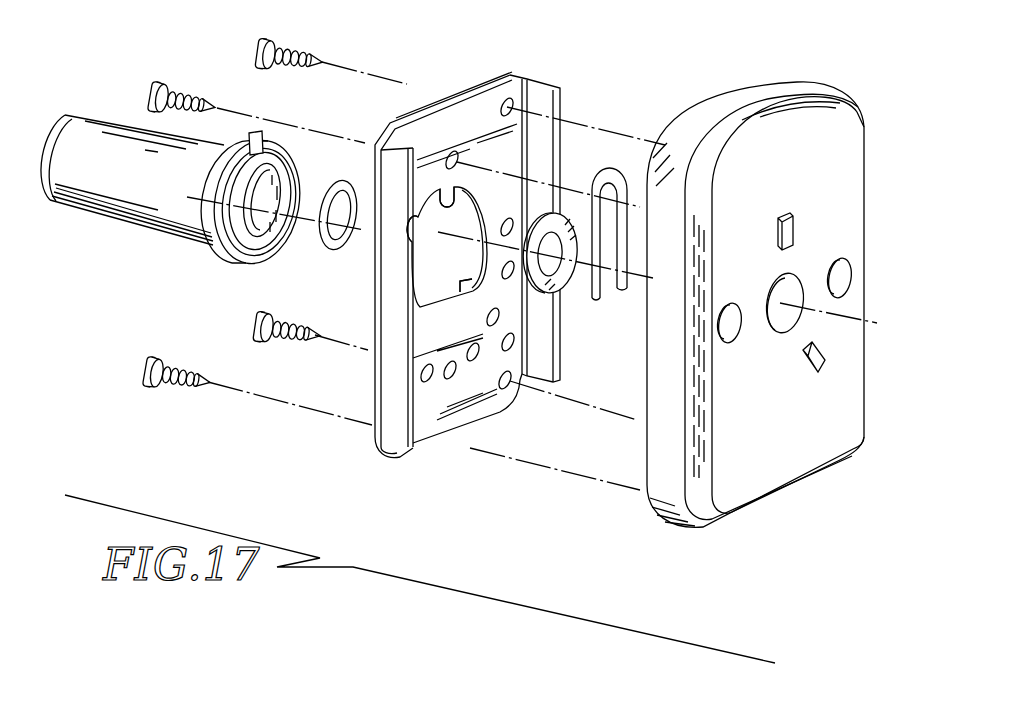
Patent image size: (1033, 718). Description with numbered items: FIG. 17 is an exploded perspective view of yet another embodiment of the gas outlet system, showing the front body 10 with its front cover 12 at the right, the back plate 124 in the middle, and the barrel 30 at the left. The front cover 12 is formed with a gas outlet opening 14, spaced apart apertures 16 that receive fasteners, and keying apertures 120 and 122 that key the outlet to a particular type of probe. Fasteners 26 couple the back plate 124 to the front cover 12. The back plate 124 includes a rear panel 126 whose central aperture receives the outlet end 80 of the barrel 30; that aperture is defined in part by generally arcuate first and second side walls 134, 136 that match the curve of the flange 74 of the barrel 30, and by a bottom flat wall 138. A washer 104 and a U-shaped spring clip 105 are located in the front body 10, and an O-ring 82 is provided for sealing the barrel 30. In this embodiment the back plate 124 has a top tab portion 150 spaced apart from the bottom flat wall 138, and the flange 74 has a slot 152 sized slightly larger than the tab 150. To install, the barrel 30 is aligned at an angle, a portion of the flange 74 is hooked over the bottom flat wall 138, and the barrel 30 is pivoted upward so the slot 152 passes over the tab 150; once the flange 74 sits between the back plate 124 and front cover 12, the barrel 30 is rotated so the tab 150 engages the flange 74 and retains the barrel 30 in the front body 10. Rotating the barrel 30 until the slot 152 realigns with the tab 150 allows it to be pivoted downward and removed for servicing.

The front body 10 is at (703, 87).
The front cover 12 is at (842, 183).
The gas outlet opening 14 is at (778, 342).
The apertures 16 is at (840, 253).
The fasteners 26 is at (292, 65).
The barrel 30 is at (127, 193).
The flange 74 is at (276, 145).
The end of barrel 80 is at (193, 255).
The O-ring 82 is at (333, 247).
The washer 104 is at (561, 213).
The retaining clip 105 is at (617, 170).
The keying aperture 120 is at (787, 208).
The keying aperture 122 is at (808, 367).
The back plate 124 is at (518, 75).
The rear panel 126 is at (442, 127).
The first side wall 134 is at (418, 247).
The second side wall 136 is at (481, 223).
The bottom flat wall 138 is at (475, 279).
The top tab portion 150 is at (438, 189).
The slot 152 is at (248, 130).